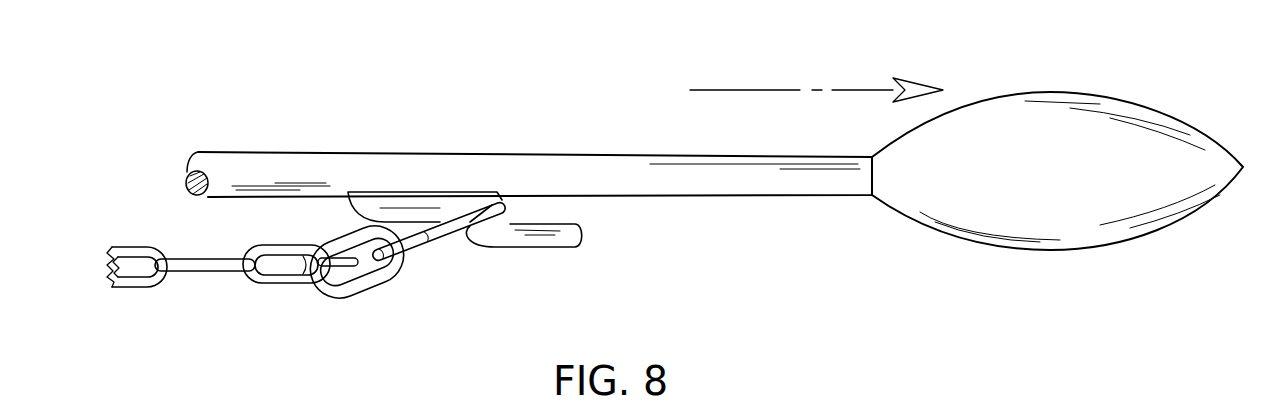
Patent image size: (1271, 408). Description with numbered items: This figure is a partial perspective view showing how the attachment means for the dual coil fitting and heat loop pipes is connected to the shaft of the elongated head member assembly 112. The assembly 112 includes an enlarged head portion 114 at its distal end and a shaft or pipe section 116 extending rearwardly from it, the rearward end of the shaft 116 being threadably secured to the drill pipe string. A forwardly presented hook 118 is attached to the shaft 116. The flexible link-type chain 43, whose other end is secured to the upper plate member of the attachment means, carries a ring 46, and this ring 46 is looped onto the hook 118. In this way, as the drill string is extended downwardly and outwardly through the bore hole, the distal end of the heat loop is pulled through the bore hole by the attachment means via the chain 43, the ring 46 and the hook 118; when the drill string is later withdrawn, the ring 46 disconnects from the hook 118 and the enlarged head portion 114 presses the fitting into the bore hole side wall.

The head member assembly 112 is at (541, 120).
The enlarged head portion 114 is at (1080, 93).
The shaft 116 is at (750, 180).
The hook 118 is at (550, 240).
The ring 46 is at (433, 240).
The chain 43 is at (215, 270).